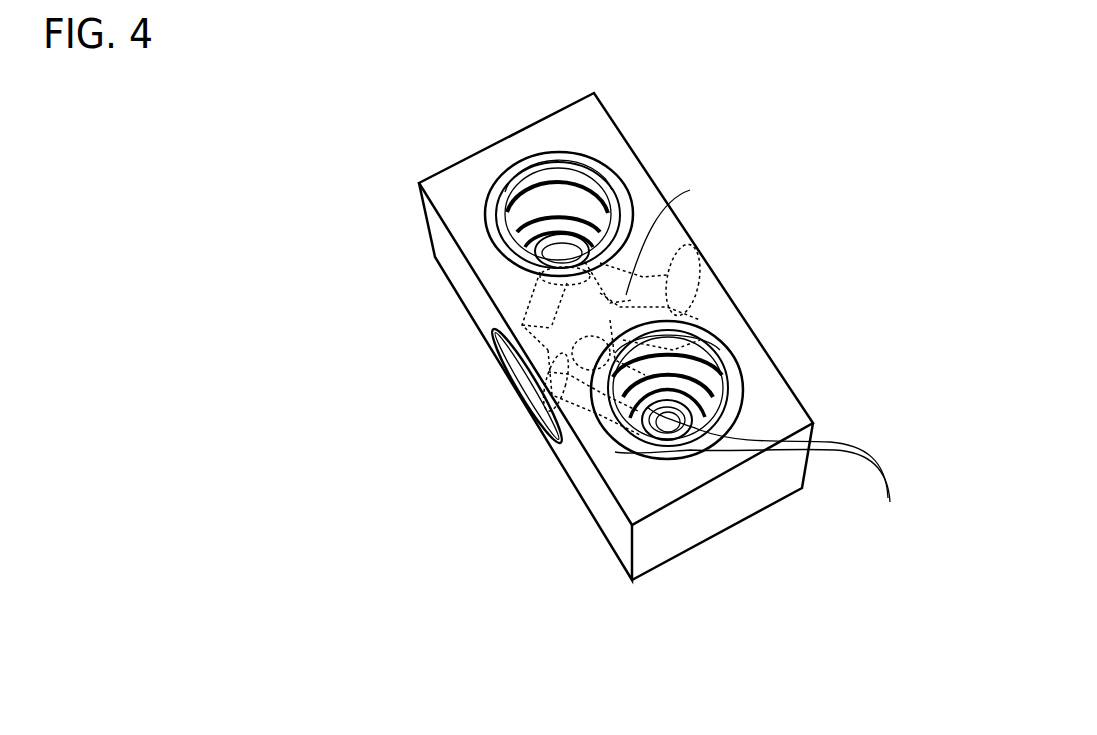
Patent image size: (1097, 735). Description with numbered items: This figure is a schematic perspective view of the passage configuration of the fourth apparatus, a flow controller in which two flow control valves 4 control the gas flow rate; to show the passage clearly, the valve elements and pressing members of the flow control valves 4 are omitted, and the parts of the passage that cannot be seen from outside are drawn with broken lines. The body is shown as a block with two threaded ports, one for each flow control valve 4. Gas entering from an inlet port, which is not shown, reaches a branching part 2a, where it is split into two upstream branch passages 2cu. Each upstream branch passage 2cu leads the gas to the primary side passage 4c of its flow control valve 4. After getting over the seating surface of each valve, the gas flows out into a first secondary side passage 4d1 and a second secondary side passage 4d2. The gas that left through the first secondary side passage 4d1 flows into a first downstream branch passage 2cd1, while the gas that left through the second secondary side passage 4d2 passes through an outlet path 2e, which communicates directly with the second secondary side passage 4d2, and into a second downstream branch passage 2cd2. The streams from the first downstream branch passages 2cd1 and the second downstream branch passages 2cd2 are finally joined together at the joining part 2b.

The flow control valve 4 is at (840, 103).
The primary side passage 4c is at (547, 197).
The first secondary side passage 4d1 is at (548, 230).
The second secondary side passage 4d2 is at (583, 183).
The outlet path 2e is at (617, 287).
The branching part 2a is at (543, 367).
The upstream branch passage 2cu is at (537, 310).
The first downstream branch passage 2cd1 is at (638, 273).
The second downstream branch passage 2cd2 is at (608, 330).
The joining part 2b is at (705, 302).